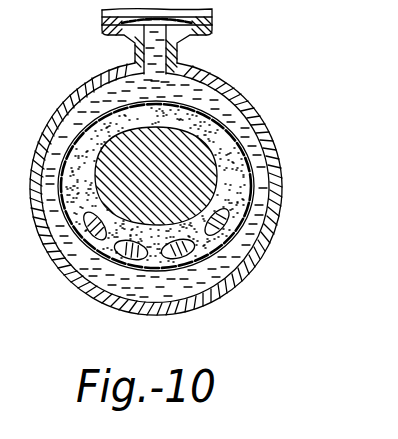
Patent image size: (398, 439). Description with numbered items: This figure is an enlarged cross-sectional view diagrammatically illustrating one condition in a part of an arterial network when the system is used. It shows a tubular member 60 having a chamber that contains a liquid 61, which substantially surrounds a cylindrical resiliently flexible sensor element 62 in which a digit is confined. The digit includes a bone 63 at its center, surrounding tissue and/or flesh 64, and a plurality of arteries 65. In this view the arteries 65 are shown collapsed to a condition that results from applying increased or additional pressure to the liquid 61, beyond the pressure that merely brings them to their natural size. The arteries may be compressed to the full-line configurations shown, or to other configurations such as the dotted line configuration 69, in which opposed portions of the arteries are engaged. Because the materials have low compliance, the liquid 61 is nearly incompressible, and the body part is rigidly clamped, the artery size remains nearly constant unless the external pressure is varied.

The tubular member 60 is at (248, 104).
The liquid 61 is at (230, 265).
The cylindrical resiliently flexible sensor element 62 is at (213, 300).
The bone 63 is at (173, 140).
The tissue and/or flesh 64 is at (212, 118).
The arteries 65 is at (168, 252).
The dotted line configuration 69 is at (98, 232).